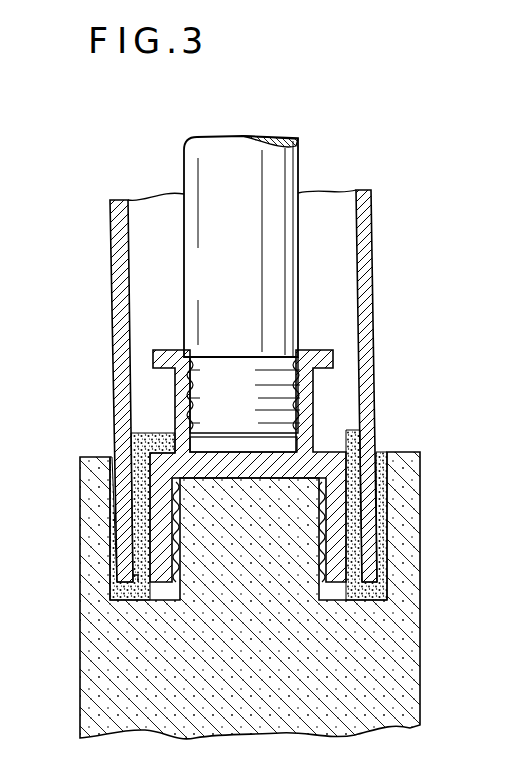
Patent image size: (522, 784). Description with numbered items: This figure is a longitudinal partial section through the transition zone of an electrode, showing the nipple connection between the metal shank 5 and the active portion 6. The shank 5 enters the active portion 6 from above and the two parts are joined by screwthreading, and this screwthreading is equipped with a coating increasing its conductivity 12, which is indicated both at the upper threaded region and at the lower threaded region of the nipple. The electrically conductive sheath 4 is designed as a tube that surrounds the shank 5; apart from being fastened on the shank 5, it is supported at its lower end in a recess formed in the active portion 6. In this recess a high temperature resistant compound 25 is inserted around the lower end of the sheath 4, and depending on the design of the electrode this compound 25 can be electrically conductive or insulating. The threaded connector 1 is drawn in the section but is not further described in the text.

The threaded insert 1 is at (315, 408).
The electrically conductive sheath 4 is at (375, 291).
The metal shank 5 is at (287, 170).
The active portion 6 is at (405, 668).
The coating increasing conductivity 12 is at (188, 397).
The high temperature resistant compound 25 is at (150, 604).